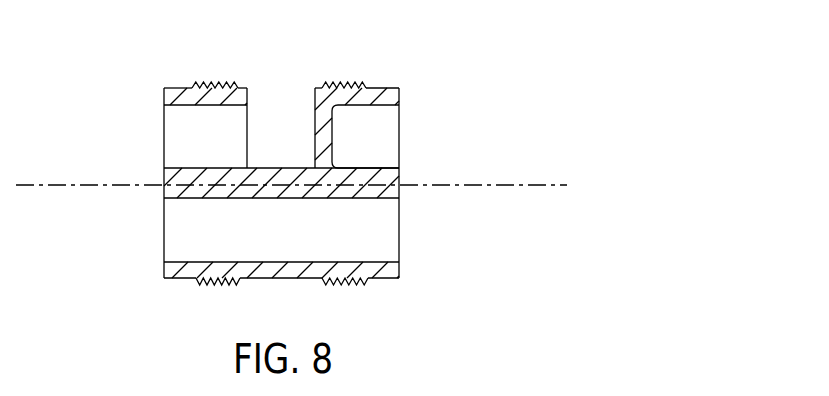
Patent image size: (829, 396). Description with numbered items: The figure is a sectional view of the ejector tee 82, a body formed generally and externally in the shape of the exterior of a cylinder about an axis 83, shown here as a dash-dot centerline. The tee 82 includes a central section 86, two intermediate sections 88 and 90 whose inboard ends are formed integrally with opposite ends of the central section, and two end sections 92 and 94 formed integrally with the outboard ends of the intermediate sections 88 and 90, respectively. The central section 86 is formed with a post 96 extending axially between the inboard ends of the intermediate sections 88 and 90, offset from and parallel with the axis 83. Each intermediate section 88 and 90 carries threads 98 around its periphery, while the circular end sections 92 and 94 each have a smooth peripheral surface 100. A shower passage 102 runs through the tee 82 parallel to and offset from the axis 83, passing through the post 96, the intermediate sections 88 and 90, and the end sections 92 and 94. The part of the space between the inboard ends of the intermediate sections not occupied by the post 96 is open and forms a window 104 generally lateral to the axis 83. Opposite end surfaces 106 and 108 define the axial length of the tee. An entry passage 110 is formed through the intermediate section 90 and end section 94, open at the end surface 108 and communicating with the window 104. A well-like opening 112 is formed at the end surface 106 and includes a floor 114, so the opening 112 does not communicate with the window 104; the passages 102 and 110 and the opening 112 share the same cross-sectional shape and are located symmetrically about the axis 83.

The ejector tee 82 is at (77, 265).
The axis 83 is at (53, 186).
The central section 86 is at (300, 165).
The intermediate section 88 is at (348, 283).
The intermediate section 90 is at (223, 283).
The end section 92 is at (395, 283).
The end section 94 is at (176, 282).
The post 96 is at (263, 167).
The threads 98 is at (221, 81).
The smooth peripheral surface 100 is at (173, 88).
The shower passage 102 is at (375, 199).
The window 104 is at (276, 128).
The end surface 106 is at (400, 92).
The end surface 108 is at (163, 102).
The entry passage 110 is at (178, 168).
The well-like opening 112 is at (378, 106).
The floor 114 is at (332, 127).